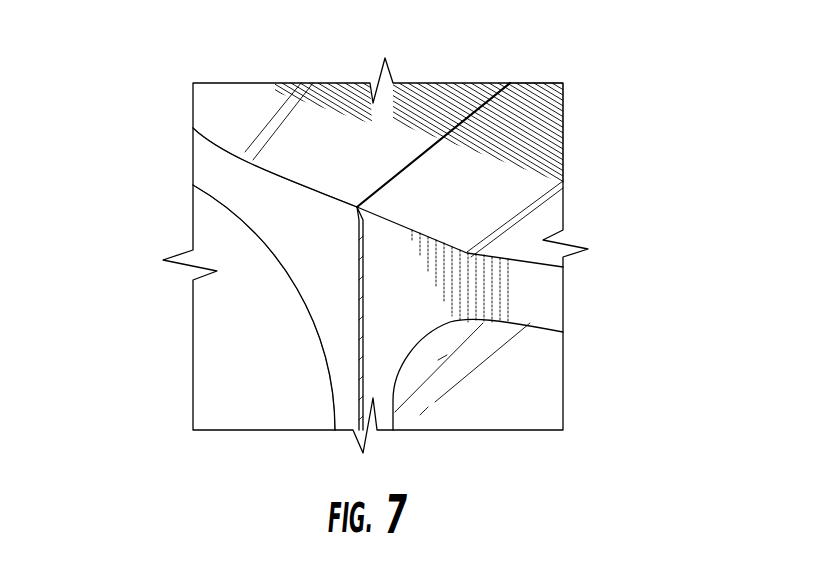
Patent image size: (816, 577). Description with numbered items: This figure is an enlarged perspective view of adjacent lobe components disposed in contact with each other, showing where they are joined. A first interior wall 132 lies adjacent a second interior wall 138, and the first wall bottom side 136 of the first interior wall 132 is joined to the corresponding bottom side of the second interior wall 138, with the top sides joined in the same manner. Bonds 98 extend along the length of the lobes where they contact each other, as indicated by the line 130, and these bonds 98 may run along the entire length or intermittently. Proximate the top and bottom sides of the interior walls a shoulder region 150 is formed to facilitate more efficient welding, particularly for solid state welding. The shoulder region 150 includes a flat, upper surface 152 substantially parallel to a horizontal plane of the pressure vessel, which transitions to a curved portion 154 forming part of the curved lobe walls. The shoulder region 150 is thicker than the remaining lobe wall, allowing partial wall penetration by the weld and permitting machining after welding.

The bonds 98 is at (515, 107).
The line 130 is at (343, 398).
The first interior wall 132 is at (308, 165).
The first wall bottom side 136 is at (385, 417).
The second interior wall 138 is at (538, 107).
The shoulder region 150 is at (397, 304).
The flat, upper surface 152 is at (291, 166).
The curved portion 154 is at (212, 115).